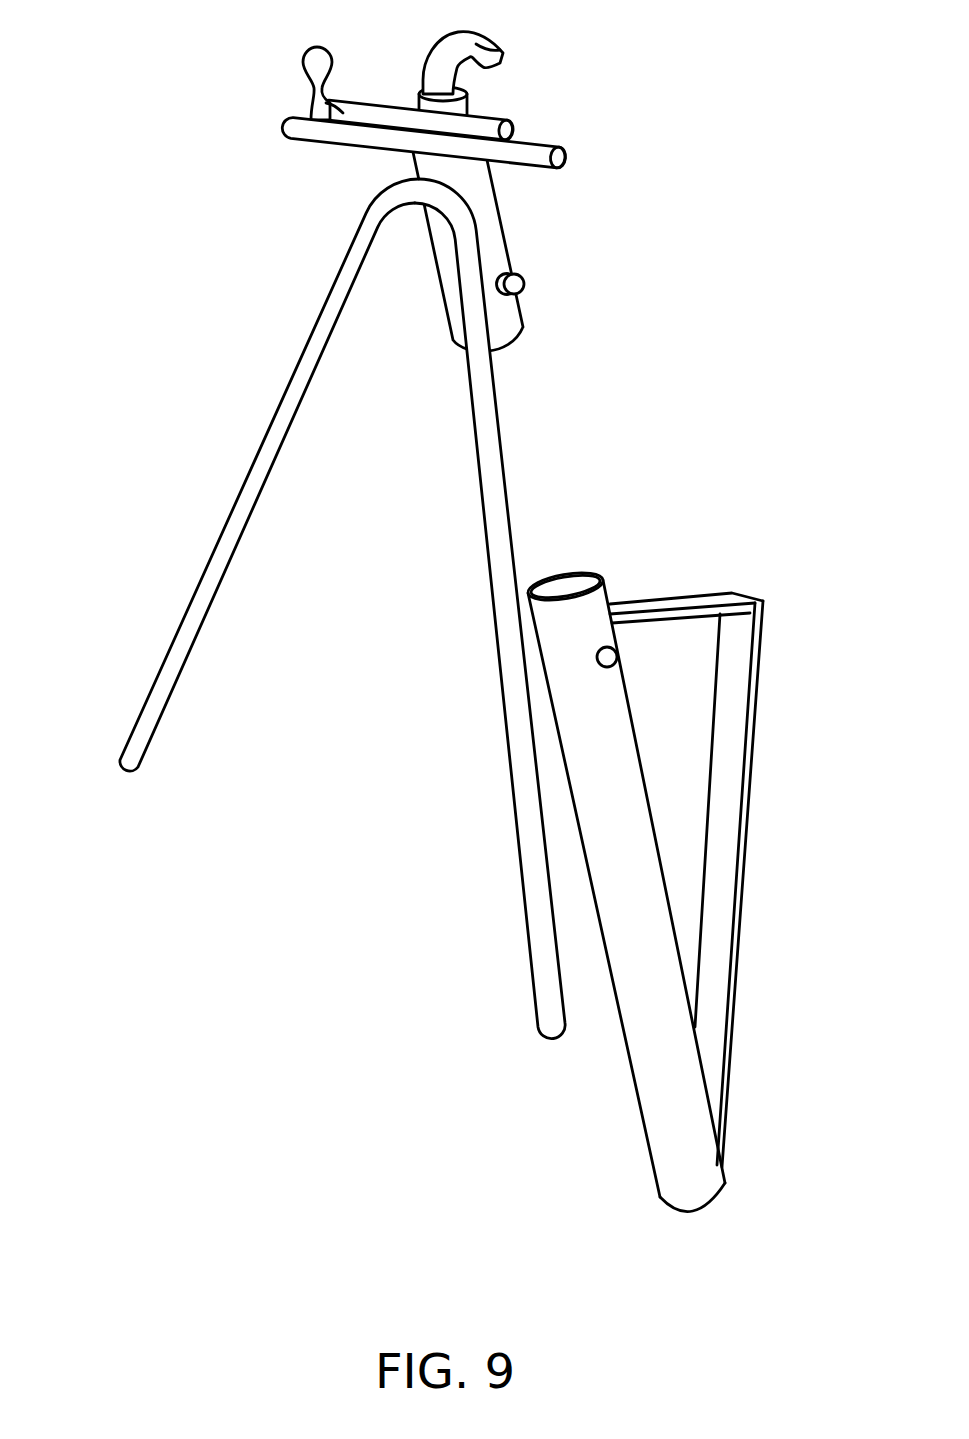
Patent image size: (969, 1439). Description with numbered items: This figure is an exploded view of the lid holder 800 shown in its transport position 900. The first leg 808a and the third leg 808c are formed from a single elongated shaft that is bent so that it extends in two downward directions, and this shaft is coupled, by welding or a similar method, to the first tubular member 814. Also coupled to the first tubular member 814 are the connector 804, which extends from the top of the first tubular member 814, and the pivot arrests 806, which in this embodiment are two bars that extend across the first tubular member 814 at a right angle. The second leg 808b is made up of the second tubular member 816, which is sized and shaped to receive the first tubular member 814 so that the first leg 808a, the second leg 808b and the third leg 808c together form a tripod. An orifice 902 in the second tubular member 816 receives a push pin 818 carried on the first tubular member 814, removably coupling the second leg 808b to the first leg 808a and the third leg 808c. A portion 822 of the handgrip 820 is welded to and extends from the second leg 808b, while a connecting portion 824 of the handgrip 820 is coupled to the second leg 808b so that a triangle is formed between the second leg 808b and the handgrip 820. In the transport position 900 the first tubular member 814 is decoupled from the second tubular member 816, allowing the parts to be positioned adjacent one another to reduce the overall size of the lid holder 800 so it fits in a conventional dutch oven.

The lid holder 800 is at (153, 135).
The connector 804 is at (505, 52).
The pivot arrests 806 is at (316, 74).
The first leg 808a is at (168, 667).
The second leg 808b is at (625, 899).
The third leg 808c is at (535, 960).
The first tubular member 814 is at (490, 218).
The second tubular member 816 is at (660, 1150).
The push pin 818 is at (518, 285).
The handgrip 820 is at (733, 846).
The portion of the handgrip 822 is at (673, 605).
The connecting portion 824 is at (737, 940).
The transport position 900 is at (857, 51).
The orifice 902 is at (613, 648).